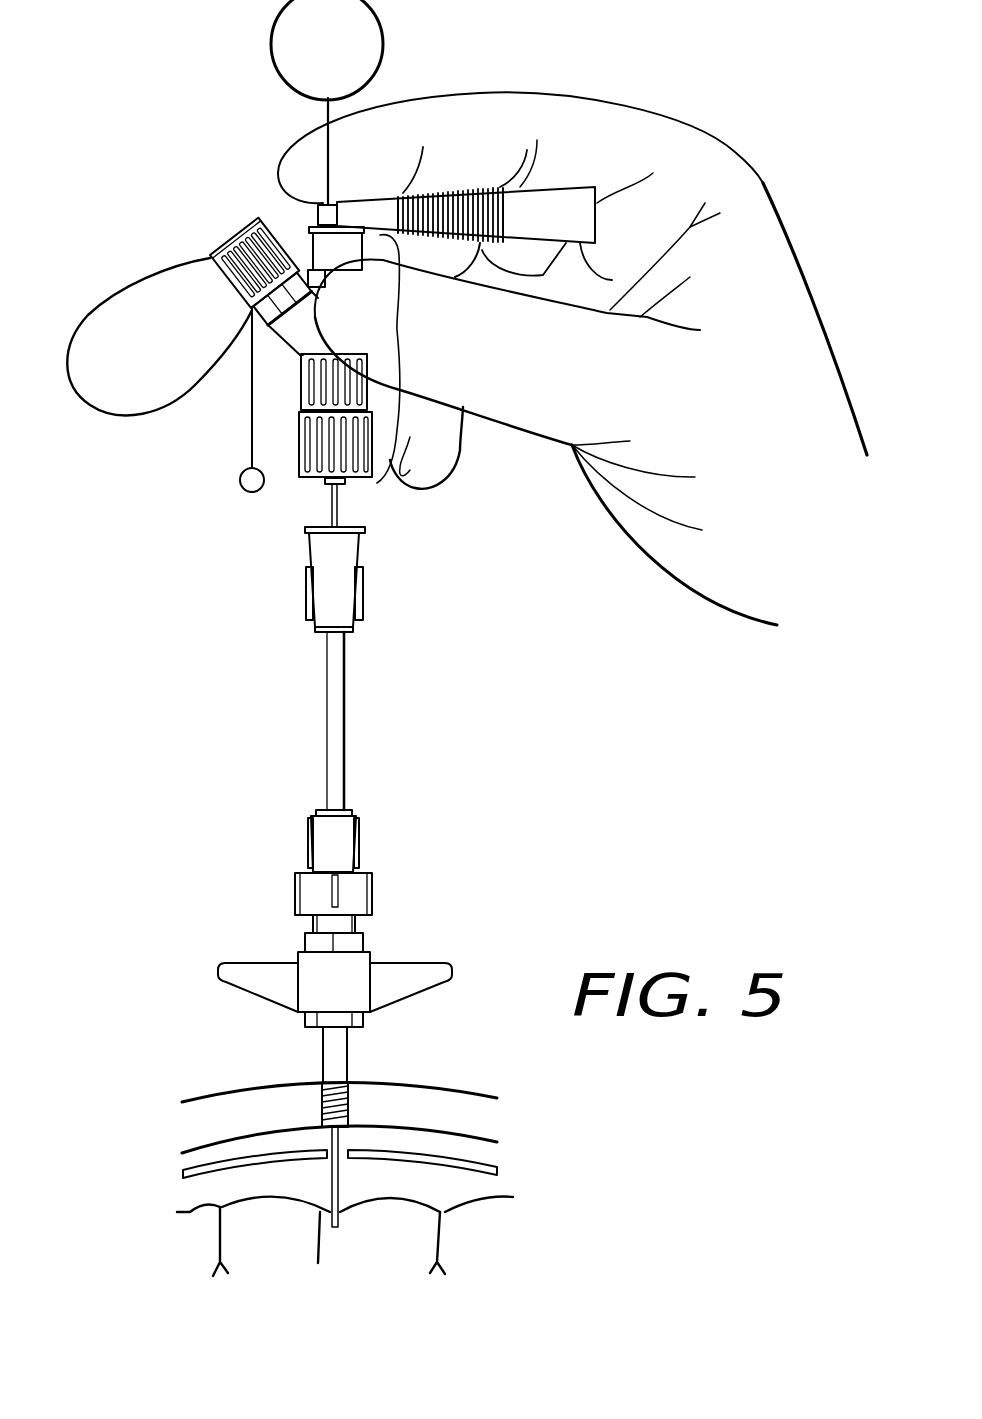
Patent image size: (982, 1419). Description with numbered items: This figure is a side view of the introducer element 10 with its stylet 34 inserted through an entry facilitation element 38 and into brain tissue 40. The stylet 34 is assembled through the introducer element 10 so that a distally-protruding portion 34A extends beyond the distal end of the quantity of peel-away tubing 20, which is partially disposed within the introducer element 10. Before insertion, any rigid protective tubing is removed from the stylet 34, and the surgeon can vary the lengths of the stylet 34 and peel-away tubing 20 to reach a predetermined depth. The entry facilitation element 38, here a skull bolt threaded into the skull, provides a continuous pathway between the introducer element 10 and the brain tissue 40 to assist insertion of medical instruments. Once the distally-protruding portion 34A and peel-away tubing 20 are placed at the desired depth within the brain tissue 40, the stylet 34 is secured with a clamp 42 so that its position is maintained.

The introducer element 10 is at (398, 327).
The peel-away tubing 20 is at (250, 428).
The stylet 34 is at (384, 33).
The distally-protruding portion of the stylet 34A is at (338, 1180).
The entry facilitation element 38 is at (360, 1123).
The brain tissue 40 is at (153, 1212).
The clamp 42 is at (522, 210).